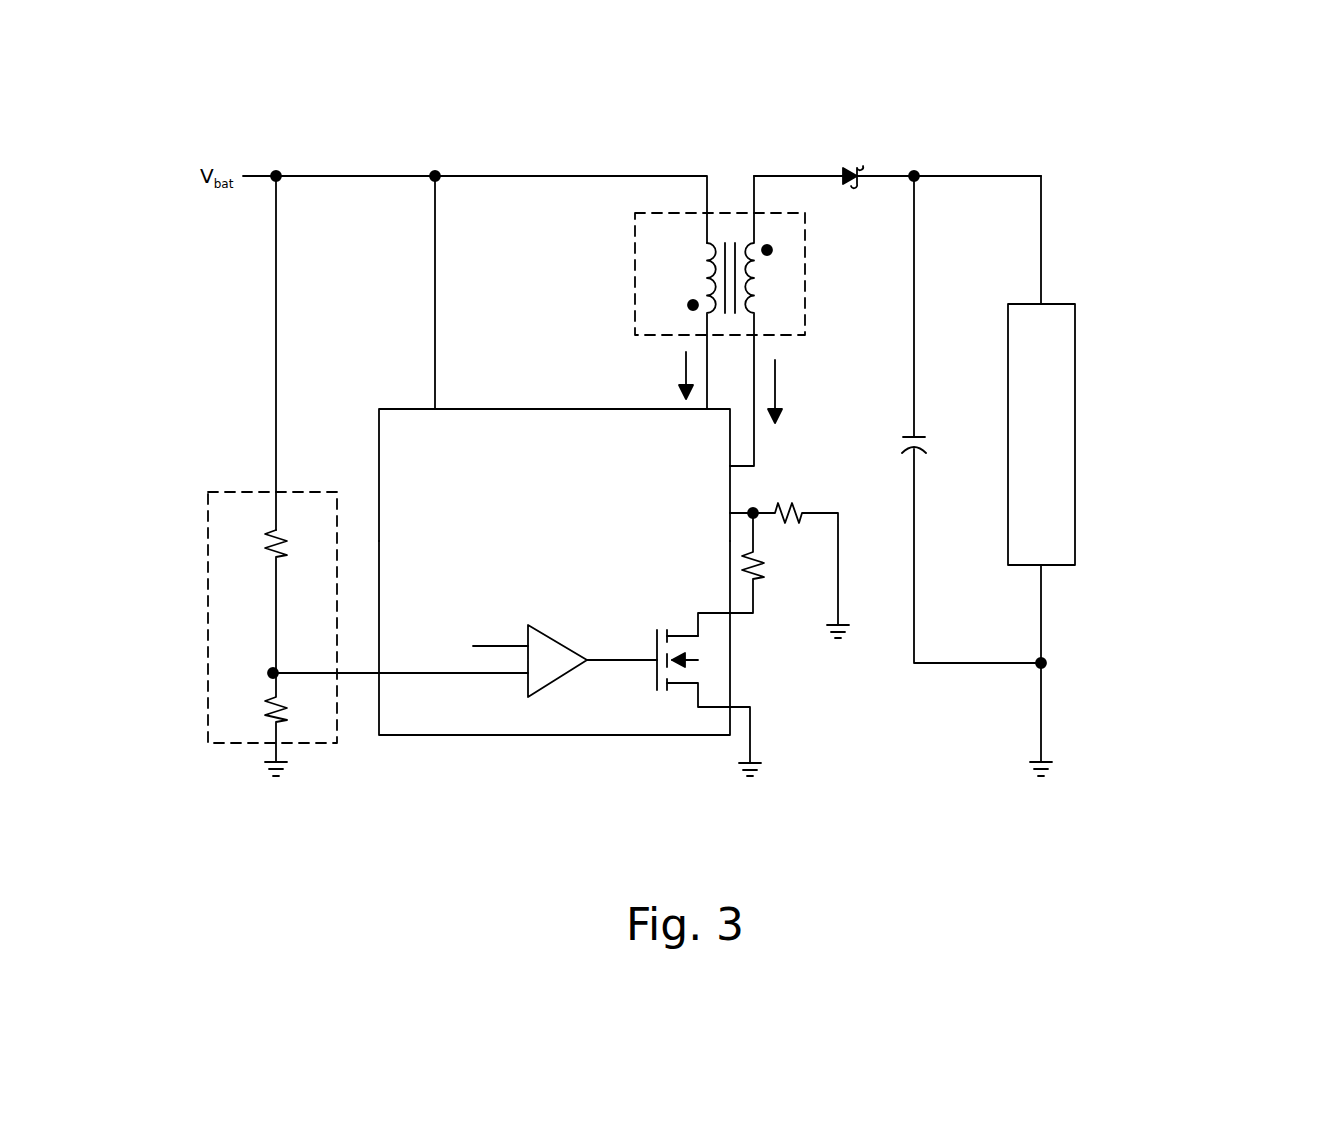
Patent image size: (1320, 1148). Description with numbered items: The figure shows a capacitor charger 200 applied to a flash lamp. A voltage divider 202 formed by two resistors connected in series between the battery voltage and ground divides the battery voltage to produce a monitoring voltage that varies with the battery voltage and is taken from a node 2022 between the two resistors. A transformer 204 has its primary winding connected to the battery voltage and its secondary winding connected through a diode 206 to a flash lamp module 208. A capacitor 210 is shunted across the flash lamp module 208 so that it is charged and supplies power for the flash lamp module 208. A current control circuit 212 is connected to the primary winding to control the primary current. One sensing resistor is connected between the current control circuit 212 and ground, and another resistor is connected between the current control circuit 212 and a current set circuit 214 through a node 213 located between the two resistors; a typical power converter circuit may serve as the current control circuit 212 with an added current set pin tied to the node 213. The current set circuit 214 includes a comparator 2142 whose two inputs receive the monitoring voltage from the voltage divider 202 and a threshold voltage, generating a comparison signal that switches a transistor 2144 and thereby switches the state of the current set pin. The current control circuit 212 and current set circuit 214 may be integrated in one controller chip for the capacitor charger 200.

The capacitor charger 200 is at (1156, 163).
The voltage divider 202 is at (238, 490).
The node 2022 is at (272, 674).
The transformer 204 is at (660, 213).
The diode 206 is at (877, 160).
The flash lamp module 208 is at (1075, 430).
The capacitor 210 is at (925, 425).
The current control circuit 212 is at (552, 409).
The node 213 is at (756, 510).
The current set circuit 214 is at (475, 735).
The comparator 2142 is at (558, 680).
The transistor 2144 is at (670, 712).